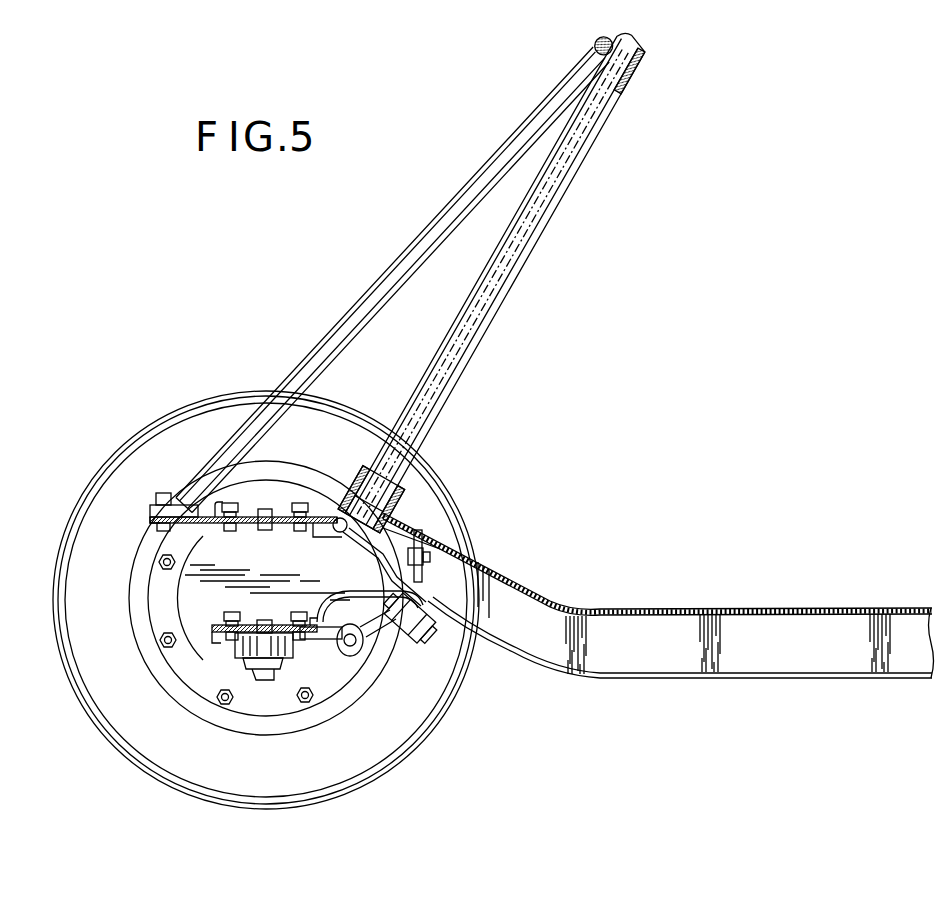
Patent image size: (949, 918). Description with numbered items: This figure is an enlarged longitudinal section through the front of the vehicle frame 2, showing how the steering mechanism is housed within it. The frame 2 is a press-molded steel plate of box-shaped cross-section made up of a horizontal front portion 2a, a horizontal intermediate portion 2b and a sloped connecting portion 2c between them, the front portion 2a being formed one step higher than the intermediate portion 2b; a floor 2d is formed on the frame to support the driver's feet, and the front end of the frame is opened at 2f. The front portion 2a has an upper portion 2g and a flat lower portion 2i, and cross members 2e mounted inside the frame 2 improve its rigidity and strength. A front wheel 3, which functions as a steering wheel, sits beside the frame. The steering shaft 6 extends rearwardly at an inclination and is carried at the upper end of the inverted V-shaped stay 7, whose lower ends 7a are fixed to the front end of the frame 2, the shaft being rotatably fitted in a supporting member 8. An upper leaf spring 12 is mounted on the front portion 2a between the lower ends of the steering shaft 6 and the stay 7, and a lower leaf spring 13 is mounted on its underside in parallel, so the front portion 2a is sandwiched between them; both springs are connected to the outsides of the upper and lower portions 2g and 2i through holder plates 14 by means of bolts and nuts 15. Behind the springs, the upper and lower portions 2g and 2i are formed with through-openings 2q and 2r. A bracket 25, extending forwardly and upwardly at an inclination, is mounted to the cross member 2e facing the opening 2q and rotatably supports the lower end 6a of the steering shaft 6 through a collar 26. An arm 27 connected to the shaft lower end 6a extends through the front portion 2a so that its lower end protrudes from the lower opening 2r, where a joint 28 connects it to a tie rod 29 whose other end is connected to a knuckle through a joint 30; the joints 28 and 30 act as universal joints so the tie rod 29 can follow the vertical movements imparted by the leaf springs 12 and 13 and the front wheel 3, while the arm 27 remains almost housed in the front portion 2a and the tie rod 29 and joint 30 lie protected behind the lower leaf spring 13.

The frame 2 is at (688, 607).
The front portion 2a is at (195, 500).
The intermediate portion 2b is at (853, 607).
The sloped connecting portion 2c is at (513, 584).
The floor 2d is at (750, 608).
The cross member 2e is at (455, 525).
The opened front end 2f is at (207, 617).
The upper portion 2g is at (217, 523).
The lower portion 2i is at (207, 593).
The through-opening 2q is at (314, 536).
The through-opening 2r is at (318, 612).
The front wheel 3 is at (238, 407).
The steering shaft 6 is at (572, 172).
The lower end of steering shaft 6a is at (380, 503).
The stay 7 is at (522, 131).
The lower end of stay 7a is at (158, 513).
The supporting member 8 is at (652, 56).
The leaf spring 12 is at (249, 530).
The leaf spring 13 is at (270, 681).
The holder plate 14 is at (281, 515).
The bolts and nuts 15 is at (228, 530).
The bracket 25 is at (420, 533).
The collar 26 is at (340, 500).
The arm 27 is at (415, 570).
The joint 28 is at (413, 629).
The tie rod 29 is at (380, 632).
The joint 30 is at (352, 657).